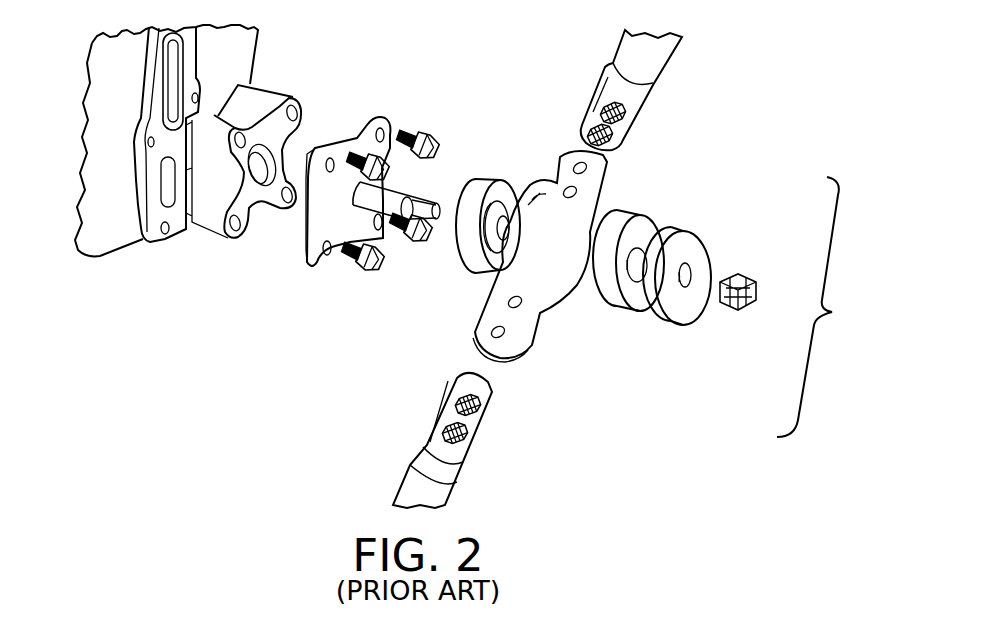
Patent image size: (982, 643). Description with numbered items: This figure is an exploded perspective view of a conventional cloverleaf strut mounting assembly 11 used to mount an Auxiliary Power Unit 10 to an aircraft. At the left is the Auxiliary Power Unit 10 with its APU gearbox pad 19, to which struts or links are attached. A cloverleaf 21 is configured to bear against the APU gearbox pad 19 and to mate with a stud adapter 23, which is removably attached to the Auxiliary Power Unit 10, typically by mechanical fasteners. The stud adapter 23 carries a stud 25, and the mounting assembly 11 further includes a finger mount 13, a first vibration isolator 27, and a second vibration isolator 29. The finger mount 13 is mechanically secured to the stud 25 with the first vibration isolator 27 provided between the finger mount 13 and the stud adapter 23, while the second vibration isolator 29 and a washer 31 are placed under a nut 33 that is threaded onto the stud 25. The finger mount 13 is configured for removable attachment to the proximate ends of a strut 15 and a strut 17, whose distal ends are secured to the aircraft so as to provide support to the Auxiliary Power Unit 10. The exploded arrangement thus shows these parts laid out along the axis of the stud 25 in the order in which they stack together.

The Auxiliary Power Unit 10 is at (90, 178).
The cloverleaf strut mounting assembly 11 is at (824, 307).
The finger mount 13 is at (531, 323).
The strut 15 is at (474, 454).
The strut 17 is at (668, 62).
The APU gearbox pad 19 is at (205, 227).
The cloverleaf 21 is at (298, 110).
The stud adapter 23 is at (322, 268).
The stud 25 is at (407, 181).
The first vibration isolator 27 is at (467, 273).
The second vibration isolator 29 is at (642, 213).
The washer 31 is at (707, 237).
The nut 33 is at (733, 310).